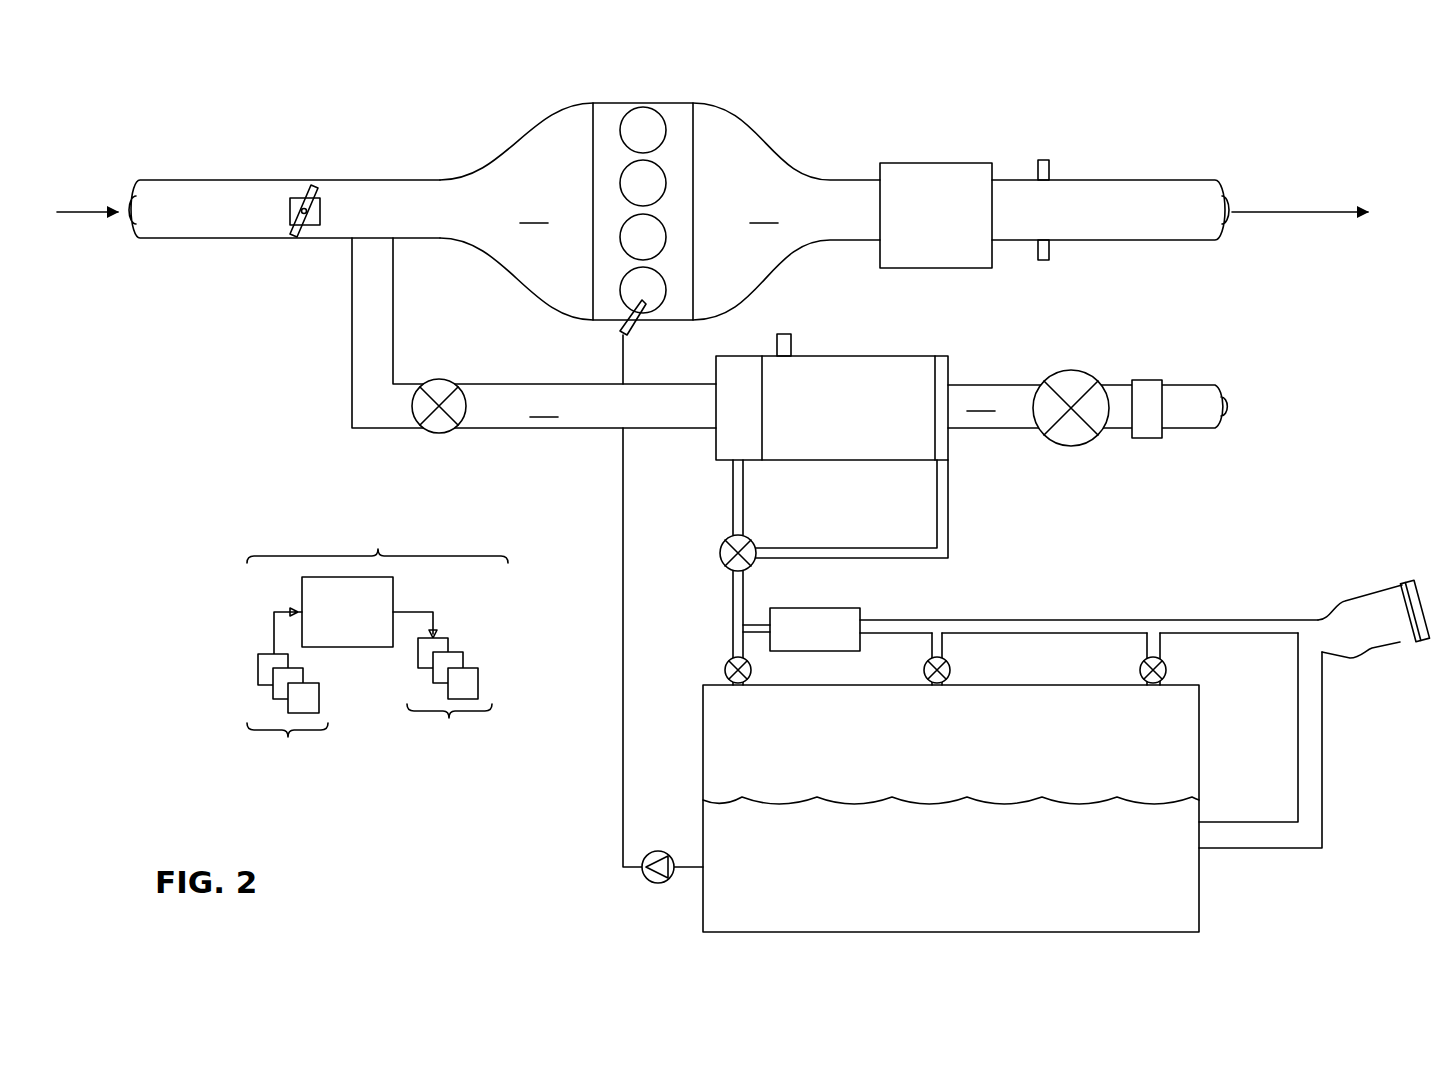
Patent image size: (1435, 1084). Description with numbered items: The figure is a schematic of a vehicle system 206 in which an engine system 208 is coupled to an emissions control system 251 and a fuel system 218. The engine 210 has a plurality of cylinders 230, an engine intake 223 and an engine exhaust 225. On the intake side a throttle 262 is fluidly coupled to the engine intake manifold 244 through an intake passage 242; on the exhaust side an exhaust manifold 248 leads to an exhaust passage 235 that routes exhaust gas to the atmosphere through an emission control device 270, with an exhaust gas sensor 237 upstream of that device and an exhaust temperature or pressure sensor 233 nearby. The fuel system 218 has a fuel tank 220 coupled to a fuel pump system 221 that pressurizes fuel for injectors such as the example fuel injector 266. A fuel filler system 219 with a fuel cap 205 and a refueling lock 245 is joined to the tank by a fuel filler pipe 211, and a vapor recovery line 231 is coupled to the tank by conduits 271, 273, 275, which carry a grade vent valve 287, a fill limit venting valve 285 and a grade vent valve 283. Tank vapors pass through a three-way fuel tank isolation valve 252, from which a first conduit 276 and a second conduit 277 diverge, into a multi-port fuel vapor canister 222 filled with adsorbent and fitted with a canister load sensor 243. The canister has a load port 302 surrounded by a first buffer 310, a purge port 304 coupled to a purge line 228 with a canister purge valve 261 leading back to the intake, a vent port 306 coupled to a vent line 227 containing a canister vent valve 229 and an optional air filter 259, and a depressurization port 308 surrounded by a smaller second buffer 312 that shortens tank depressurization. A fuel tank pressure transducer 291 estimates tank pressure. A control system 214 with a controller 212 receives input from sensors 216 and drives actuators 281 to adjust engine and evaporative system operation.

The fuel cap 205 is at (1405, 578).
The vehicle system 206 is at (146, 120).
The engine system 208 is at (1097, 128).
The engine 210 is at (693, 192).
The fuel filler pipe 211 is at (1322, 732).
The controller 212 is at (347, 612).
The control system 214 is at (377, 579).
The sensors 216 is at (287, 716).
The fuel system 218 is at (1254, 888).
The fuel filler system 219 is at (1378, 578).
The fuel tank 220 is at (1199, 800).
The fuel pump system 221 is at (658, 851).
The fuel vapor canister 222 is at (948, 372).
The engine intake 223 is at (513, 132).
The engine exhaust 225 is at (872, 112).
The vent line 227 is at (1087, 406).
The purge line 228 is at (534, 333).
The canister vent valve 229 is at (1068, 370).
The cylinders 230 is at (629, 140).
The vapor recovery line 231 is at (1220, 618).
The exhaust temperature or pressure sensor 233 is at (1038, 250).
The exhaust passage 235 is at (1165, 180).
The exhaust gas sensor 237 is at (1038, 172).
The intake passage 242 is at (342, 240).
The canister load sensor 243 is at (788, 334).
The engine intake manifold 244 is at (516, 211).
The refueling lock 245 is at (1413, 645).
The exhaust manifold 248 is at (786, 211).
The emissions control system 251 is at (1238, 337).
The fuel tank isolation valve 252 is at (720, 556).
The air filter 259 is at (1150, 380).
The canister purge valve 261 is at (428, 383).
The throttle 262 is at (318, 210).
The fuel injector 266 is at (628, 322).
The emission control device 270 is at (921, 170).
The conduit 271 is at (746, 644).
The conduit 273 is at (932, 645).
The conduit 275 is at (1147, 645).
The first conduit 276 is at (733, 496).
The second conduit 277 is at (948, 505).
The actuators 281 is at (449, 699).
The grade vent valve 283 is at (1161, 672).
The fill limit venting valve 285 is at (950, 672).
The grade vent valve 287 is at (725, 666).
The fuel tank pressure transducer 291 is at (860, 620).
The load port 302 is at (739, 460).
The purge port 304 is at (716, 412).
The vent port 306 is at (948, 422).
The depressurization port 308 is at (937, 462).
The first buffer 310 is at (740, 372).
The second buffer 312 is at (938, 362).